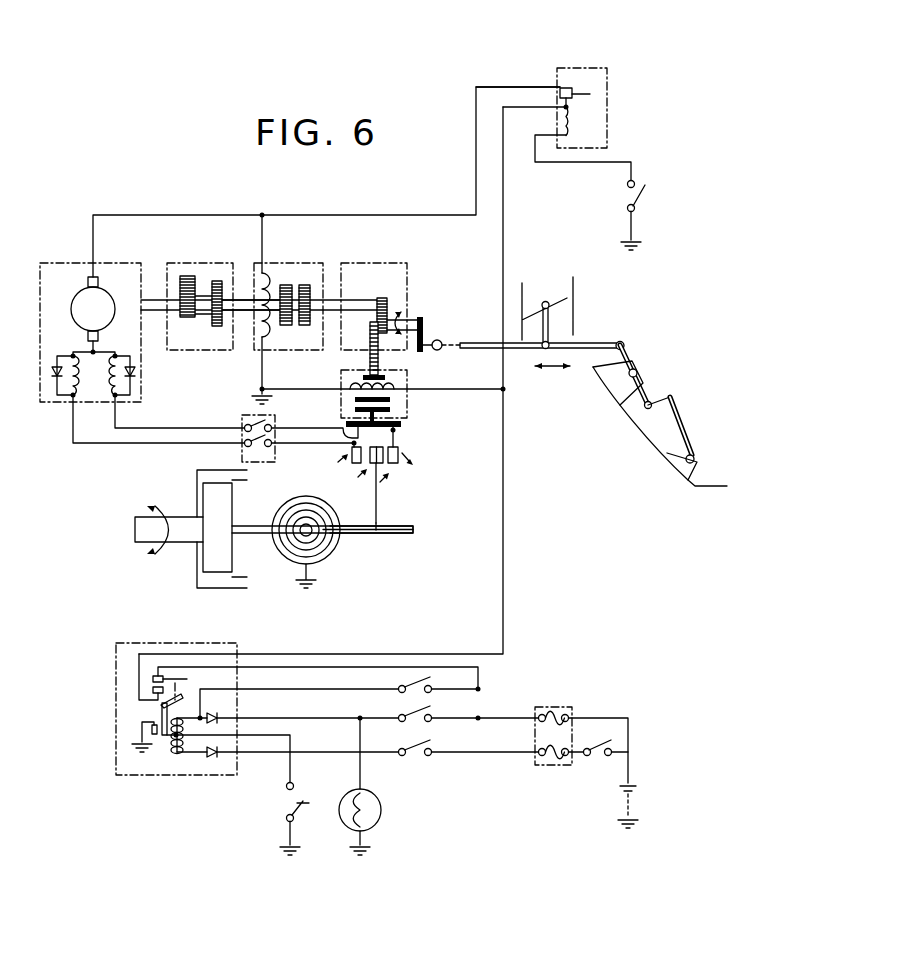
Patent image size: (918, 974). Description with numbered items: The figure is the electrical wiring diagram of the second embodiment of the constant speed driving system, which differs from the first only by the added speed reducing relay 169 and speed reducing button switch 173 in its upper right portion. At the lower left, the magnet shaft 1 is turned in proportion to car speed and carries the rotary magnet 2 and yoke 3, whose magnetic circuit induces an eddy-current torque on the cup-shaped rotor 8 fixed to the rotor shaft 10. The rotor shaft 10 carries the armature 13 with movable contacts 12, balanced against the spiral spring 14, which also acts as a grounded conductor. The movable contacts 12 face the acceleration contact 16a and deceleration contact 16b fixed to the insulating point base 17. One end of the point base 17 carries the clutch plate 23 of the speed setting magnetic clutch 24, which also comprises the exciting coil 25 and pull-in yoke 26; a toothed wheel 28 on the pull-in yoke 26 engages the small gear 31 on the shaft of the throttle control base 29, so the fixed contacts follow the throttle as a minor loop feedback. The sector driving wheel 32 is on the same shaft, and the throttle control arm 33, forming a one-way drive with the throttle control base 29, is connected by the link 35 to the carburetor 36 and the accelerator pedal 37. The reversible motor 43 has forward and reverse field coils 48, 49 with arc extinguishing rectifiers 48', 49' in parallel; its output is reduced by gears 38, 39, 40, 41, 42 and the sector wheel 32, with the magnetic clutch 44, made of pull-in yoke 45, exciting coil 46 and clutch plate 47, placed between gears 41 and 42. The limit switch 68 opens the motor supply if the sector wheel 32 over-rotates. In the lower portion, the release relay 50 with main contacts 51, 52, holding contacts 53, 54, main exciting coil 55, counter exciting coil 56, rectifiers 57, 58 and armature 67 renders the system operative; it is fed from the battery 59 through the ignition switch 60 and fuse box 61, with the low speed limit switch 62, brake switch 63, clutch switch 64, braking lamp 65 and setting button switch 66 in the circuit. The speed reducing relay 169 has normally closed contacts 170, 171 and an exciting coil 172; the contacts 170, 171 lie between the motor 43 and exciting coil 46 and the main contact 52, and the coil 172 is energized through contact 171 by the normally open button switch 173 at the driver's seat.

The magnet shaft 1 is at (136, 529).
The rotary magnet 2 is at (203, 497).
The yoke 3 is at (197, 583).
The cup-shaped rotor 8 is at (247, 563).
The rotor shaft 10 is at (388, 536).
The movable contacts 12 is at (384, 485).
The armature 13 is at (377, 509).
The spiral spring 14 is at (338, 555).
The acceleration contact 16a is at (317, 465).
The deceleration contact 16b is at (401, 464).
The point base 17 is at (398, 433).
The clutch plate 23 is at (392, 410).
The speed setting magnetic clutch 24 is at (404, 426).
The exciting coil 25 is at (404, 387).
The pull-in yoke 26 is at (354, 400).
The toothed wheel 28 is at (362, 376).
The throttle control base 29 is at (412, 323).
The small gear 31 is at (370, 325).
The sector driving wheel 32 is at (399, 318).
The throttle control arm 33 is at (425, 330).
The link 35 is at (481, 343).
The carburetor 36 is at (547, 303).
The accelerator pedal 37 is at (672, 402).
The gear 38 is at (158, 300).
The gear 39 is at (183, 280).
The gear 40 is at (215, 283).
The gear 41 is at (227, 299).
The gear 42 is at (383, 297).
The reversible motor 43 is at (62, 263).
The magnetic clutch 44 is at (303, 290).
The pull-in yoke 45 is at (285, 284).
The exciting coil 46 is at (269, 300).
The clutch plate 47 is at (312, 287).
The forward field coil 48 is at (53, 397).
The reverse field coil 49 is at (96, 397).
The rectifier 48' is at (31, 370).
The rectifier 49' is at (158, 370).
The release relay 50 is at (116, 739).
The main contact 51 is at (153, 679).
The main contact 52 is at (153, 691).
The holding contact 53 is at (153, 738).
The holding contact 54 is at (167, 740).
The main exciting coil 55 is at (175, 740).
The counter exciting coil 56 is at (181, 735).
The rectifier 57 is at (222, 716).
The rectifier 58 is at (215, 760).
The battery 59 is at (636, 806).
The ignition switch 60 is at (598, 758).
The fuse box 61 is at (556, 707).
The low speed limit switch 62 is at (417, 758).
The brake switch 63 is at (412, 713).
The clutch switch 64 is at (420, 678).
The braking lamp 65 is at (378, 818).
The setting button switch 66 is at (290, 806).
The armature 67 is at (162, 716).
The limit switch 68 is at (243, 418).
The speed reducing relay 169 is at (608, 75).
The normally closed contact 170 is at (567, 88).
The normally closed contact 171 is at (560, 92).
The exciting coil 172 is at (585, 120).
The speed reducing button switch 173 is at (647, 186).